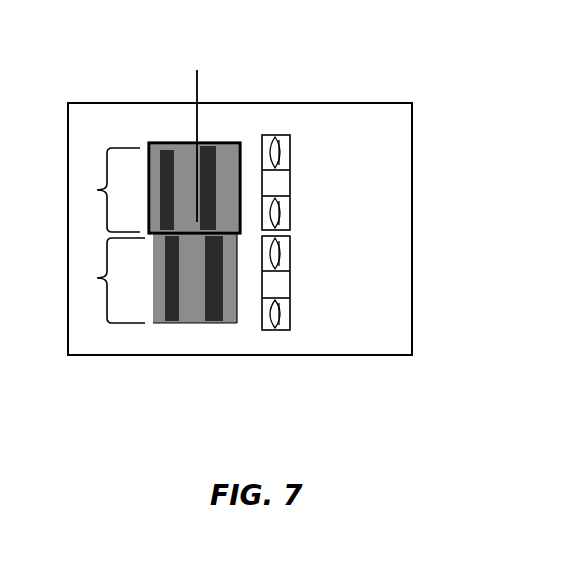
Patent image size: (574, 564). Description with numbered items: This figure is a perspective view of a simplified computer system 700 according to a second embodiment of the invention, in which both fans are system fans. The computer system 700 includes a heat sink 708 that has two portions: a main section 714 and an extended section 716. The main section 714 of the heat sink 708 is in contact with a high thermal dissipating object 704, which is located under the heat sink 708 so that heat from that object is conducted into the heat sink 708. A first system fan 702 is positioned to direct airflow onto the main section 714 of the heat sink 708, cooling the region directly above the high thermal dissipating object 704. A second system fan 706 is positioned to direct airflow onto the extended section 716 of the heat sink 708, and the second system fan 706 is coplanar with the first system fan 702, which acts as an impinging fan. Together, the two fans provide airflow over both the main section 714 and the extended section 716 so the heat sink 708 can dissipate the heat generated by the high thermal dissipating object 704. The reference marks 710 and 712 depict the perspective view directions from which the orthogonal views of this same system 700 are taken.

The computer system 700 is at (133, 103).
The first system fan 702 is at (291, 183).
The high thermal dissipating object 704 is at (224, 143).
The second system fan 706 is at (290, 285).
The heat sink 708 is at (197, 70).
The perspective view 710 is at (413, 225).
The perspective view 712 is at (222, 355).
The main section 714 is at (132, 188).
The extended section 716 is at (132, 278).